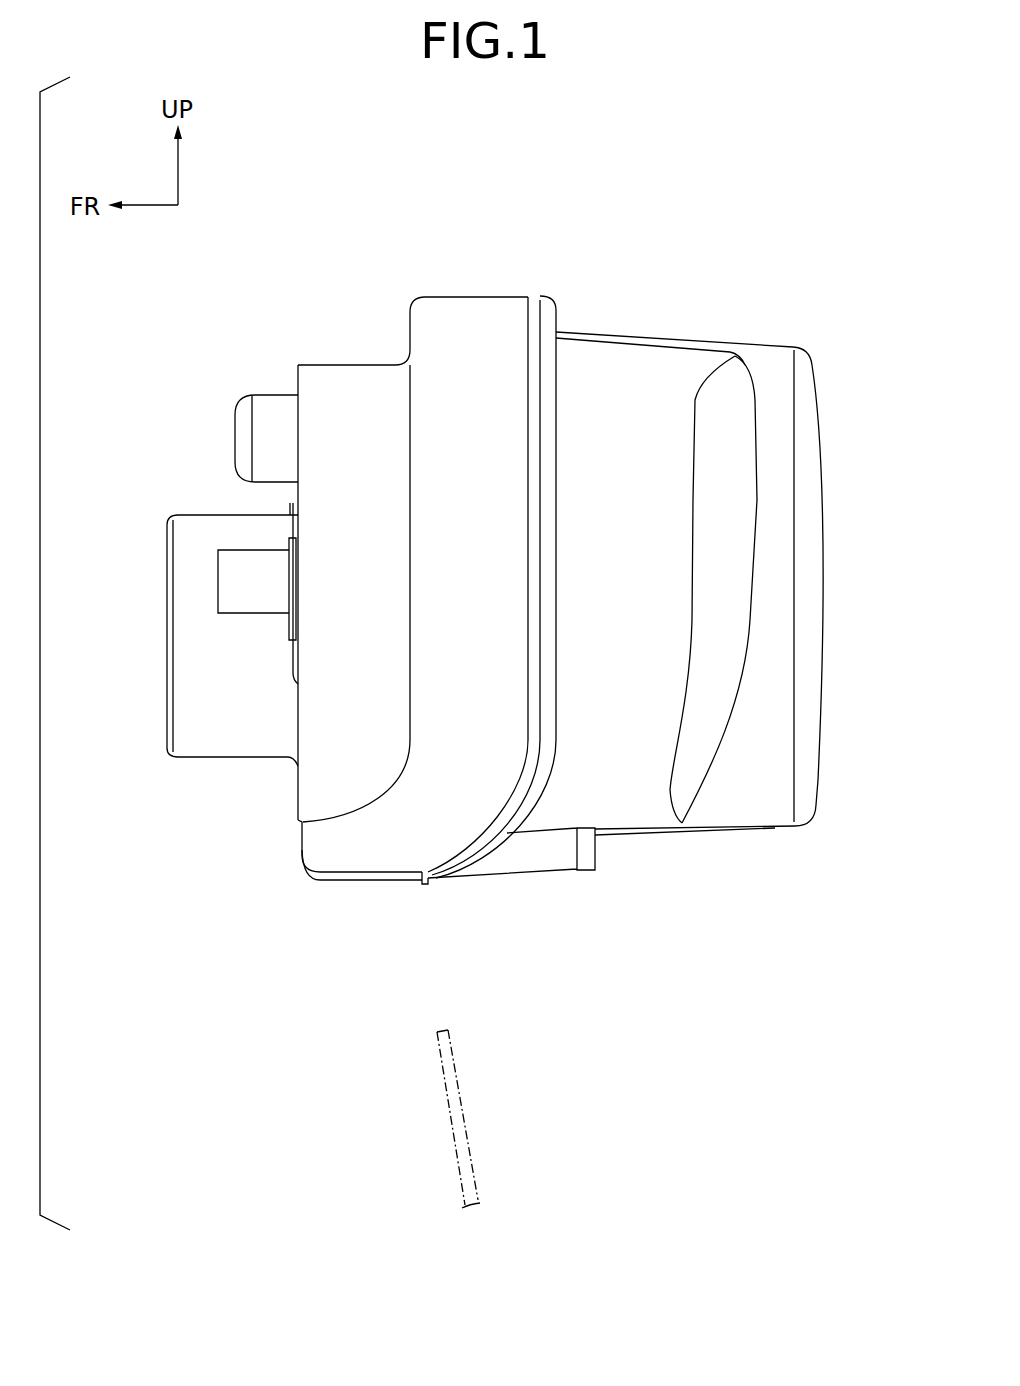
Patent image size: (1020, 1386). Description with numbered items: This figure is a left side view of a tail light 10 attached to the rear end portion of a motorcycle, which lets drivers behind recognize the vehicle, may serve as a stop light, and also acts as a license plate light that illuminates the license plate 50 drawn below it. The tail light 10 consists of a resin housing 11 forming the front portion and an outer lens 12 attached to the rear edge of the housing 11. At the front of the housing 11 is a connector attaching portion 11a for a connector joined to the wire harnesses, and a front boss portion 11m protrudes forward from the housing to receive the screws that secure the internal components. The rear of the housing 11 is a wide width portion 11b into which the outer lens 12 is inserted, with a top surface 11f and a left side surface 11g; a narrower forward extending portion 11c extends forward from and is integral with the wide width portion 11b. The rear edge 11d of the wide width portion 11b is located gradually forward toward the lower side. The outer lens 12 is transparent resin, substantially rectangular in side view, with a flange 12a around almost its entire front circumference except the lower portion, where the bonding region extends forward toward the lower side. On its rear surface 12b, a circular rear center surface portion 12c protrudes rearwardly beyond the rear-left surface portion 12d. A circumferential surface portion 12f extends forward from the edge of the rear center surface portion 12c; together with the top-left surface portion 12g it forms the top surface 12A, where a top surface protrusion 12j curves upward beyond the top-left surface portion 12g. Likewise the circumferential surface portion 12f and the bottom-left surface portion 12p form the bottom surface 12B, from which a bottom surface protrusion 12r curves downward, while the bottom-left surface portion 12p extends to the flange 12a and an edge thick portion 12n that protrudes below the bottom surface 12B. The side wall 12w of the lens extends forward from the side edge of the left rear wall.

The tail light 10 is at (608, 257).
The housing 11 is at (308, 356).
The connector attaching portion 11a is at (190, 641).
The wide width portion 11b is at (426, 286).
The forward extending portion 11c is at (362, 385).
The rear edge 11d is at (540, 322).
The top surface 11f is at (468, 295).
The left side surface 11g is at (462, 672).
The front boss portion 11m is at (232, 574).
The outer lens 12 is at (832, 410).
The top surface 12A is at (785, 343).
The bottom surface 12B is at (786, 840).
The flange 12a is at (555, 733).
The rear surface 12b is at (838, 492).
The rear center surface portion 12c is at (827, 577).
The rear-left surface portion 12d is at (727, 665).
The circumferential surface portion 12f is at (772, 625).
The top-left surface portion 12g is at (645, 340).
The top surface protrusion 12j is at (686, 340).
The edge thick portion 12n is at (410, 886).
The bottom-left surface portion 12p is at (358, 875).
The bottom surface protrusion 12r is at (692, 833).
The side wall 12w is at (626, 730).
The license plate 50 is at (463, 1115).